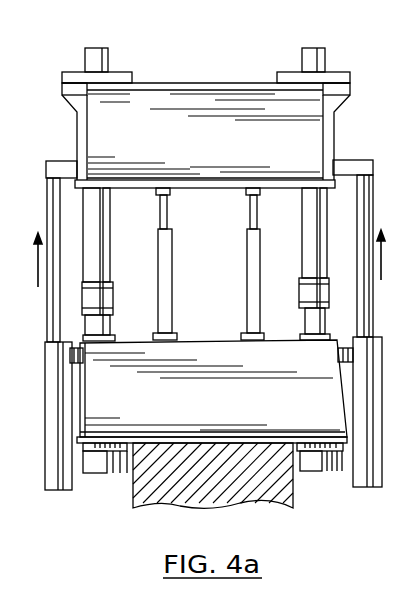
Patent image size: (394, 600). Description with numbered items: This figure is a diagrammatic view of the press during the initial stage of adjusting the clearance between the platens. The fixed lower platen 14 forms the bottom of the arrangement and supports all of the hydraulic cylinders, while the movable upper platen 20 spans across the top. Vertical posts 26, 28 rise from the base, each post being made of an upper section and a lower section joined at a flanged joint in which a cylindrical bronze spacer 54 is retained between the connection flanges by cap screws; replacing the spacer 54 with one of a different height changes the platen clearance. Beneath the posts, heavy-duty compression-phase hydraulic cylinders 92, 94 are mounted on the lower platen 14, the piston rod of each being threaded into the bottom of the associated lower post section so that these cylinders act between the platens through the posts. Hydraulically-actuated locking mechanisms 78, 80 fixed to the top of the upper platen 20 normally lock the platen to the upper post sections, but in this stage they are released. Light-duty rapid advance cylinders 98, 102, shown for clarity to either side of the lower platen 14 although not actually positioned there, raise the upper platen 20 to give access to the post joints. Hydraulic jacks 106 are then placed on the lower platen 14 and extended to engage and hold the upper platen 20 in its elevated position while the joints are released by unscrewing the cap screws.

The upper platen 20 is at (303, 142).
The vertical post 28 is at (106, 60).
The vertical post 26 is at (300, 52).
The locking mechanism 80 is at (132, 75).
The locking mechanism 78 is at (276, 74).
The hydraulic jack 106 is at (251, 251).
The bronze spacer 54 is at (113, 297).
The lower platen 14 is at (226, 411).
The compression-phase hydraulic cylinder 94 is at (107, 465).
The compression-phase hydraulic cylinder 92 is at (318, 453).
The rapid advance cylinder 102 is at (60, 492).
The rapid advance cylinder 98 is at (363, 472).